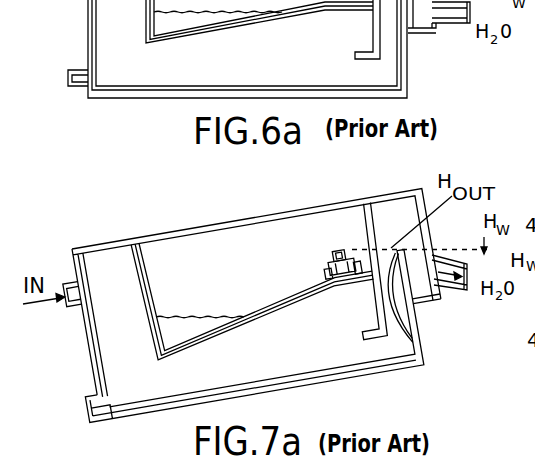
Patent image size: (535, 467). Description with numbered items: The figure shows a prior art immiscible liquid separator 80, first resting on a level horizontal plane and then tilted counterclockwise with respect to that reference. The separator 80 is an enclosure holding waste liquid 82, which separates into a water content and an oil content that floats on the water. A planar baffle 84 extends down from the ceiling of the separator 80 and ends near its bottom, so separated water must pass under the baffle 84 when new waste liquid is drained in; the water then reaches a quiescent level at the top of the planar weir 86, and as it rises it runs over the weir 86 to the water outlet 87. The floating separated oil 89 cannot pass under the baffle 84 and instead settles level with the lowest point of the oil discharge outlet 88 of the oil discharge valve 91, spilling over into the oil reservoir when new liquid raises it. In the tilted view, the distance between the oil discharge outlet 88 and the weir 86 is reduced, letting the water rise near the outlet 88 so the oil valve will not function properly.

In FIG. 7a, the immiscible liquid separator 80 is at (203, 210).
In FIG. 6a, the waste liquid 82 is at (260, 59).
In FIG. 7a, the waste liquid 82 is at (303, 362).
In FIG. 6a, the planar baffle 84 is at (372, 32).
In FIG. 7a, the planar baffle 84 is at (374, 314).
In FIG. 7a, the planar weir 86 is at (411, 334).
In FIG. 6a, the water outlet 87 is at (448, 26).
In FIG. 7a, the water outlet 87 is at (450, 289).
In FIG. 7a, the oil discharge outlet 88 is at (336, 256).
In FIG. 6a, the separated oil 89 is at (171, 17).
In FIG. 7a, the separated oil 89 is at (169, 327).
In FIG. 7a, the oil discharge valve 91 is at (331, 282).